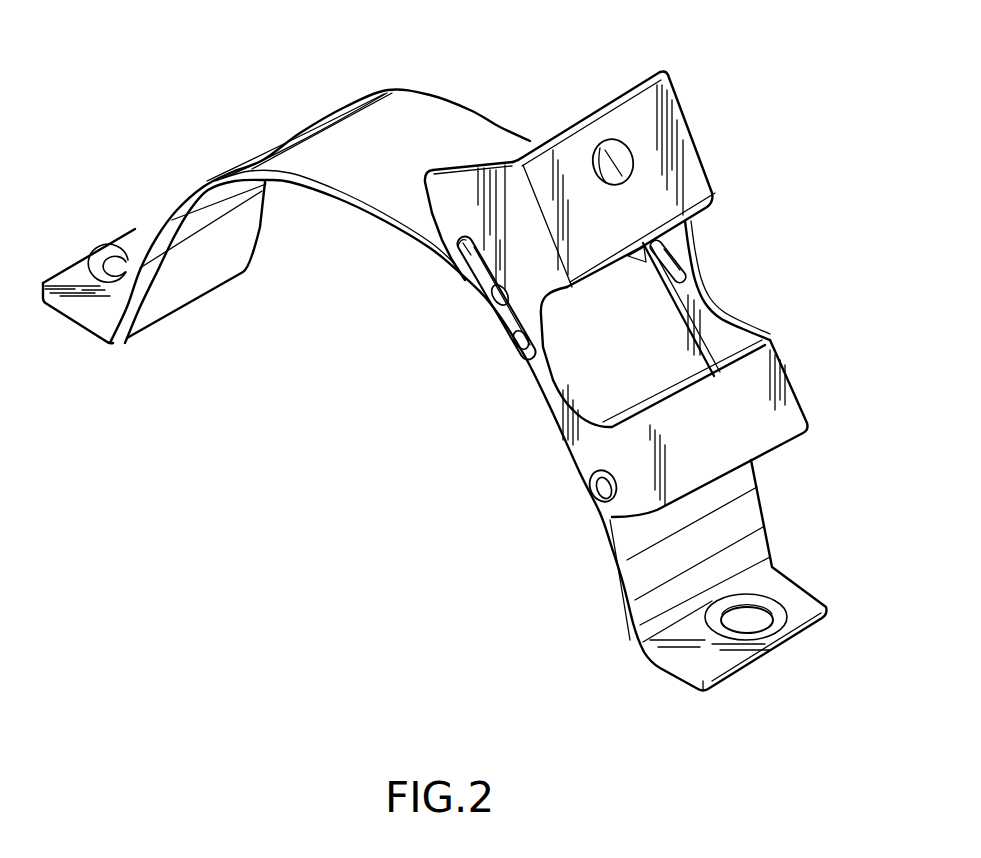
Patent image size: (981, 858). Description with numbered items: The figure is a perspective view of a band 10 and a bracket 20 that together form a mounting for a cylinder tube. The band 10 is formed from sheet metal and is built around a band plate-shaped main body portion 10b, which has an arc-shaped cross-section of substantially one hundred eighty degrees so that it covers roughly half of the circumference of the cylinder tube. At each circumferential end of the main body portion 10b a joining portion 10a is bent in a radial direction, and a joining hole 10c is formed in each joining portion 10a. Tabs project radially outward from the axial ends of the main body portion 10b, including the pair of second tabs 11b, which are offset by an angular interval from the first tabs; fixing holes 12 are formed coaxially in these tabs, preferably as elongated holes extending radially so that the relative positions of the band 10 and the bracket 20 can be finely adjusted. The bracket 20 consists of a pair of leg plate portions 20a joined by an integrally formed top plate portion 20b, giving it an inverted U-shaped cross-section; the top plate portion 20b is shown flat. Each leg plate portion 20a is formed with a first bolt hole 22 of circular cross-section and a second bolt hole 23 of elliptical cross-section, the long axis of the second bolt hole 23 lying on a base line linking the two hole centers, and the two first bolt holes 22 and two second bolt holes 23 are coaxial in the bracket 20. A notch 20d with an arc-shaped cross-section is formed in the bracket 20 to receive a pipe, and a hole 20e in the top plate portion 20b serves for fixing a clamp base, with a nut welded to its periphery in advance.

The band 10 is at (427, 92).
The joining portion 10a is at (77, 273).
The main body portion 10b is at (277, 150).
The joining hole 10c is at (117, 258).
The second tab 11b is at (495, 333).
The fixing hole 12 is at (480, 307).
The bracket 20 is at (672, 80).
The leg plate portion 20a is at (560, 403).
The top plate portion 20b is at (687, 147).
The notch 20d is at (700, 278).
The hole 20e is at (600, 147).
The first bolt hole 22 is at (591, 483).
The second bolt hole 23 is at (460, 260).